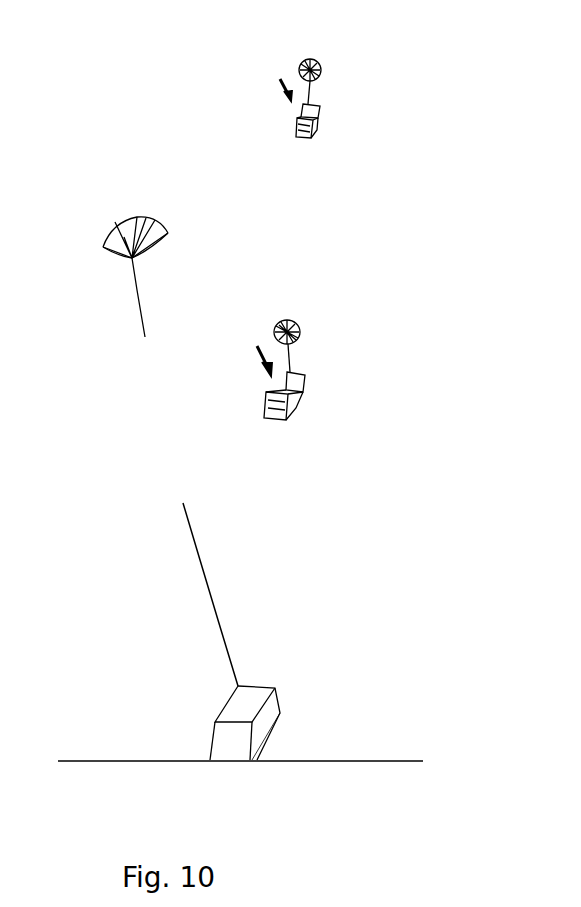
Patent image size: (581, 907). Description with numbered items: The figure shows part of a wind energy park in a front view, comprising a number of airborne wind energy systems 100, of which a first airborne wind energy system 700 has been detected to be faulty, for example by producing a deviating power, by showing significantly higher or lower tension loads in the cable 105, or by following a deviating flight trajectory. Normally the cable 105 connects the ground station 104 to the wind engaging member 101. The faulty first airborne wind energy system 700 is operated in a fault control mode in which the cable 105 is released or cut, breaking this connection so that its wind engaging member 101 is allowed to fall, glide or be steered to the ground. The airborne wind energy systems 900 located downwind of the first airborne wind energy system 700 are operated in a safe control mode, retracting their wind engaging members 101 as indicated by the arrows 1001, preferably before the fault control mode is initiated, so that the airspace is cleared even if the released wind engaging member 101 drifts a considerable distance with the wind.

The wind engaging member 101 is at (318, 67).
The cable 105 is at (199, 566).
The ground station 104 is at (216, 724).
The airborne wind energy system 100 is at (297, 684).
The first airborne wind energy system 700 is at (242, 657).
The airborne wind energy systems 900 is at (343, 118).
The arrows 1001 is at (243, 227).